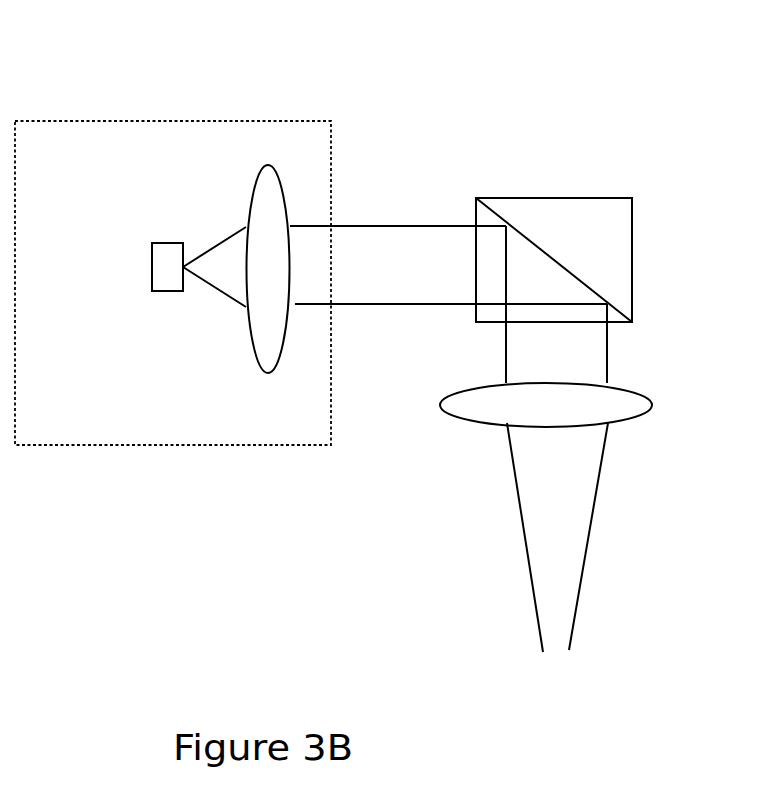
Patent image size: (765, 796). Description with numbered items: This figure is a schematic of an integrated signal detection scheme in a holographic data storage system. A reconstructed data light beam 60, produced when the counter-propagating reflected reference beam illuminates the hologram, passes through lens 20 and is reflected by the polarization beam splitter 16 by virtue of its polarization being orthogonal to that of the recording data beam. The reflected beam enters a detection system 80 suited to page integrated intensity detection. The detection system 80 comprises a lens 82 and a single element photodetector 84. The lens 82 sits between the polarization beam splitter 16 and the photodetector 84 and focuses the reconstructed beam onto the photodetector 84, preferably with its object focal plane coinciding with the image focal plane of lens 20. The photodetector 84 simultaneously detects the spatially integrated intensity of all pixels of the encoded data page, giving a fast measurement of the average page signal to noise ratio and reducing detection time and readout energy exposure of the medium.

The polarization beam splitter 16 is at (597, 247).
The lens 20 is at (638, 400).
The reconstructed data light beam 60 is at (453, 223).
The detection system 80 is at (165, 120).
The lens 82 is at (273, 178).
The single element photodetector 84 is at (167, 278).